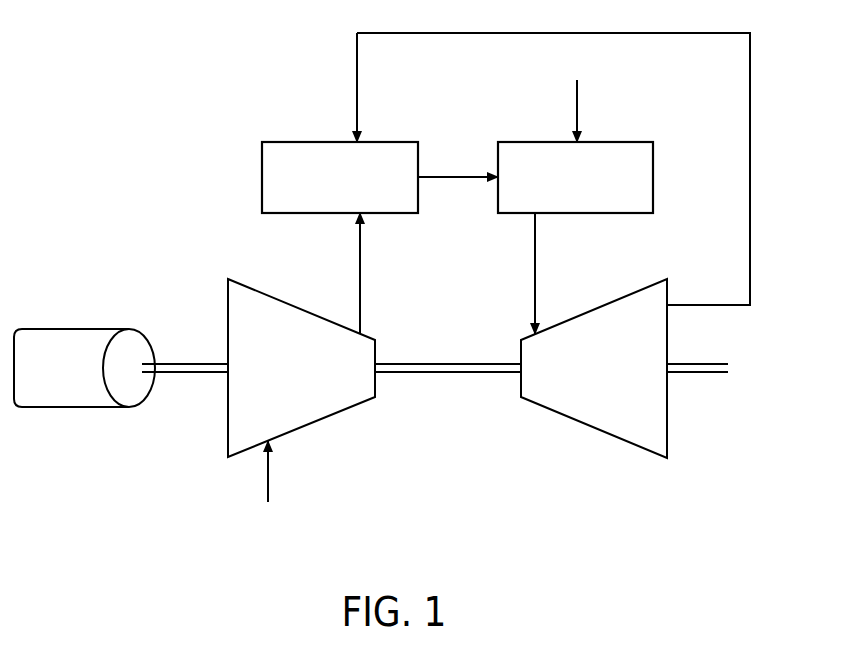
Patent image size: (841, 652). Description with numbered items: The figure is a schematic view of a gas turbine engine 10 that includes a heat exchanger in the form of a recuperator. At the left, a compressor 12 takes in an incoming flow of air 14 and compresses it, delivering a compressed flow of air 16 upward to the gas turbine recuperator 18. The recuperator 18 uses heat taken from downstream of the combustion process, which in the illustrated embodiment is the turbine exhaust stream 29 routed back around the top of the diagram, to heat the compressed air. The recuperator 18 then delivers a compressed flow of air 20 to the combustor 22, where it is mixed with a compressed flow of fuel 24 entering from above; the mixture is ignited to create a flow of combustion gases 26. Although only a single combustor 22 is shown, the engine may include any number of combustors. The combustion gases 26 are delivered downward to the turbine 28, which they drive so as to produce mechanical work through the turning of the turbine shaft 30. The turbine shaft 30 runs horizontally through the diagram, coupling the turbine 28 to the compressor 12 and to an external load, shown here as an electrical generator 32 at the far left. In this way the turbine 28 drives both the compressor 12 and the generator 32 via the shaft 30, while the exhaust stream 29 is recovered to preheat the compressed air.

The gas turbine engine 10 is at (158, 175).
The compressor 12 is at (282, 382).
The incoming flow of air 14 is at (262, 486).
The compressed flow of air 16 is at (358, 258).
The gas turbine recuperator 18 is at (325, 192).
The compressed flow of air 20 is at (458, 172).
The combustor 22 is at (561, 192).
The compressed flow of fuel 24 is at (579, 100).
The flow of combustion gases 26 is at (538, 262).
The turbine 28 is at (588, 382).
The turbine exhaust stream 29 is at (752, 165).
The turbine shaft 30 is at (700, 376).
The electrical generator 32 is at (78, 328).